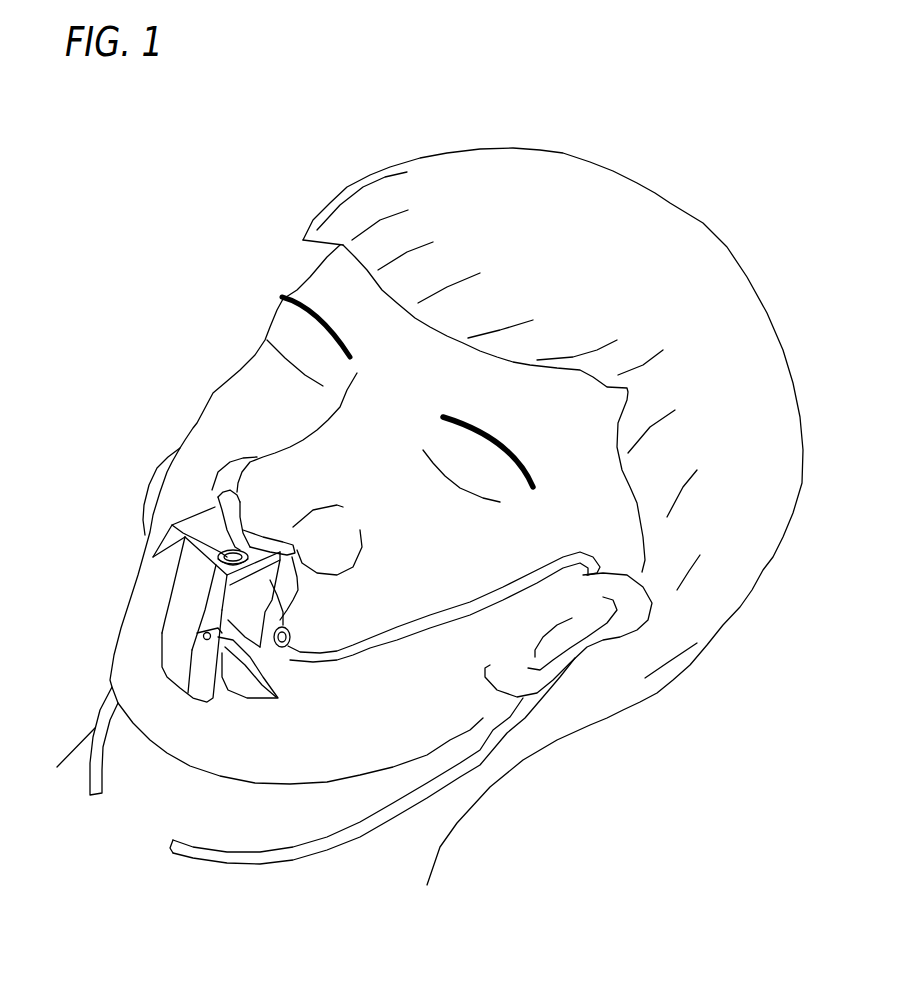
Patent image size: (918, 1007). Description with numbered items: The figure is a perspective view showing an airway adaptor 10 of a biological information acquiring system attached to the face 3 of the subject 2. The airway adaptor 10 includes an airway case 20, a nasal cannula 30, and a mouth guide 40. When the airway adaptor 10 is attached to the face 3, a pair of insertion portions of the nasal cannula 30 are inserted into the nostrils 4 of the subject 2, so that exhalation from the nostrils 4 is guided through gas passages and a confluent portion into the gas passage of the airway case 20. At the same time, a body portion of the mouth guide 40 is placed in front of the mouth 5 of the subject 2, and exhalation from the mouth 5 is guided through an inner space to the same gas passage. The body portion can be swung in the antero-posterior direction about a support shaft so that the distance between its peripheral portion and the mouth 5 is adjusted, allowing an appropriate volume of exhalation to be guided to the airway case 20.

The subject 2 is at (553, 477).
The face 3 is at (321, 514).
The nostrils 4 is at (328, 664).
The mouth 5 is at (232, 724).
The airway adaptor 10 is at (62, 507).
The airway case 20 is at (176, 593).
The nasal cannula 30 is at (155, 536).
The mouth guide 40 is at (142, 656).